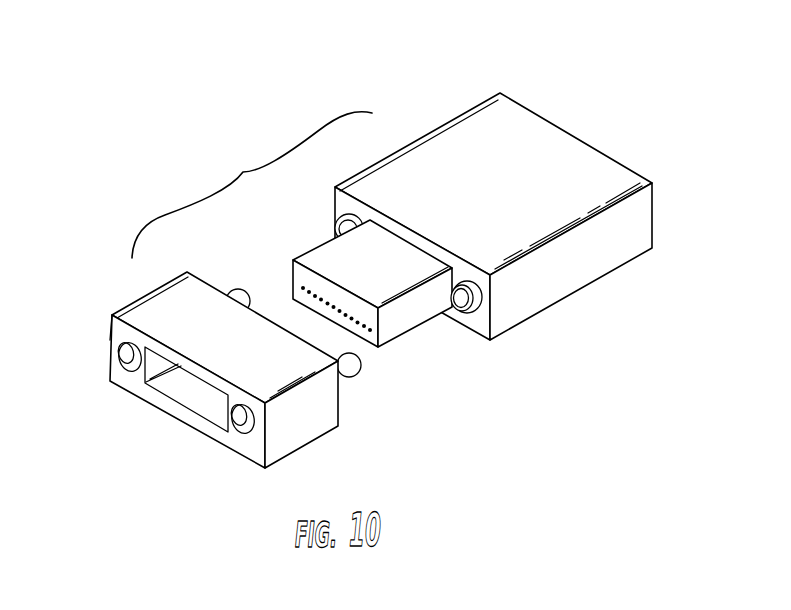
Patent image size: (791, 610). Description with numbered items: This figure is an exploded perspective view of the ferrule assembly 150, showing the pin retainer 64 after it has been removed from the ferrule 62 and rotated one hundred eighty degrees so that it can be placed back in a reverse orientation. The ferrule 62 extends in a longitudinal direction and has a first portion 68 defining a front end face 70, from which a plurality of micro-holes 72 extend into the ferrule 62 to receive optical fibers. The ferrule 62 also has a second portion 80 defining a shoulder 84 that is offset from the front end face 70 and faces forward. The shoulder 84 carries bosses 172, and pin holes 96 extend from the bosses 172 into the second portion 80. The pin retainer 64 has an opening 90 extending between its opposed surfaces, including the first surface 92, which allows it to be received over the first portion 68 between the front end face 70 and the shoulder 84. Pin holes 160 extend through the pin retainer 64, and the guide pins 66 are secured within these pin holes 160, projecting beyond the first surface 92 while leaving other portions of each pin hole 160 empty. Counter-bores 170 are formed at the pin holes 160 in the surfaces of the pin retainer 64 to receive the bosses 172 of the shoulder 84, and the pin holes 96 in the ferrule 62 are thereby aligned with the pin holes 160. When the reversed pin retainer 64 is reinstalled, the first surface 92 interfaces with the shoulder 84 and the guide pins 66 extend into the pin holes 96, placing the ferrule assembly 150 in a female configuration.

The ferrule 62 is at (459, 183).
The pin retainer 64 is at (193, 361).
The guide pins 66 is at (226, 288).
The first portion 68 is at (346, 313).
The front end face 70 is at (368, 335).
The micro-holes 72 is at (302, 298).
The second portion 80 is at (407, 148).
The shoulder 84 is at (336, 205).
The opening 90 is at (197, 408).
The first surface 92 is at (115, 332).
The pin holes 96 is at (462, 308).
The ferrule assembly 150 is at (243, 174).
The pin holes 160 is at (105, 316).
The counter-bores 170 is at (118, 363).
The bosses 172 is at (343, 214).